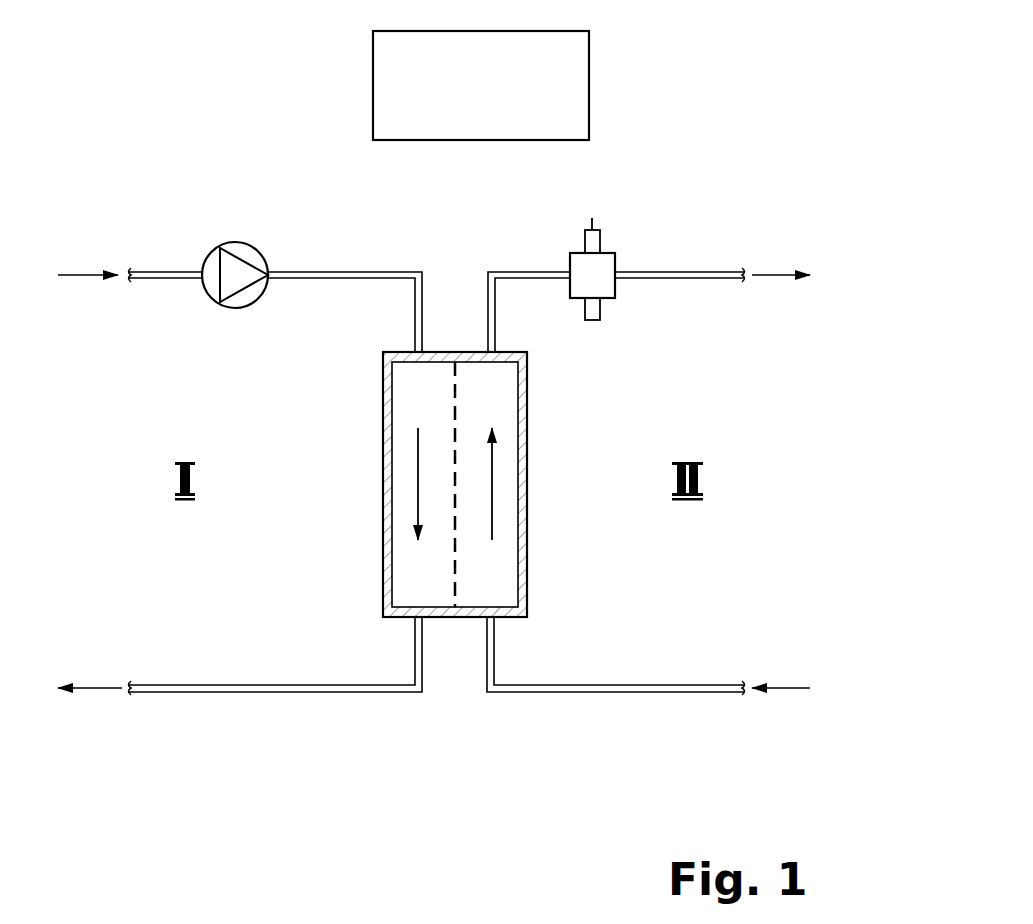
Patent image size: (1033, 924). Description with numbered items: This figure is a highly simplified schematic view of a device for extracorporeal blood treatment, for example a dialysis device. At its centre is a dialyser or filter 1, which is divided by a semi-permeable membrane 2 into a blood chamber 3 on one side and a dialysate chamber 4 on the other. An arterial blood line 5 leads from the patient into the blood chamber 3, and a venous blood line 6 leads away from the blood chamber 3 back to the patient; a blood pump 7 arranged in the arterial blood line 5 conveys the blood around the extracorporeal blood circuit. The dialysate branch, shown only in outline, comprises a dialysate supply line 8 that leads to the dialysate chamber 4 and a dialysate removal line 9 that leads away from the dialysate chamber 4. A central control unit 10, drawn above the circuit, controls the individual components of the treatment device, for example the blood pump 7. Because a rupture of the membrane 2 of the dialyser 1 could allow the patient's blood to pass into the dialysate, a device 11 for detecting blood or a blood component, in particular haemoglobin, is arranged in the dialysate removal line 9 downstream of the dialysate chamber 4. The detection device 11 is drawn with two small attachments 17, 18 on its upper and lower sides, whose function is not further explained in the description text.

The filter unit 1 is at (527, 423).
The membrane 2 is at (456, 388).
The first chamber 3 is at (392, 478).
The second chamber 4 is at (516, 478).
The inlet line 5 is at (150, 278).
The outlet line 6 is at (162, 688).
The pump 7 is at (233, 308).
The inlet line 8 is at (590, 688).
The connecting line 9 is at (523, 276).
The control unit 10 is at (589, 62).
The valve 11 is at (620, 258).
The valve actuator 17 is at (595, 242).
The valve actuator 18 is at (595, 312).